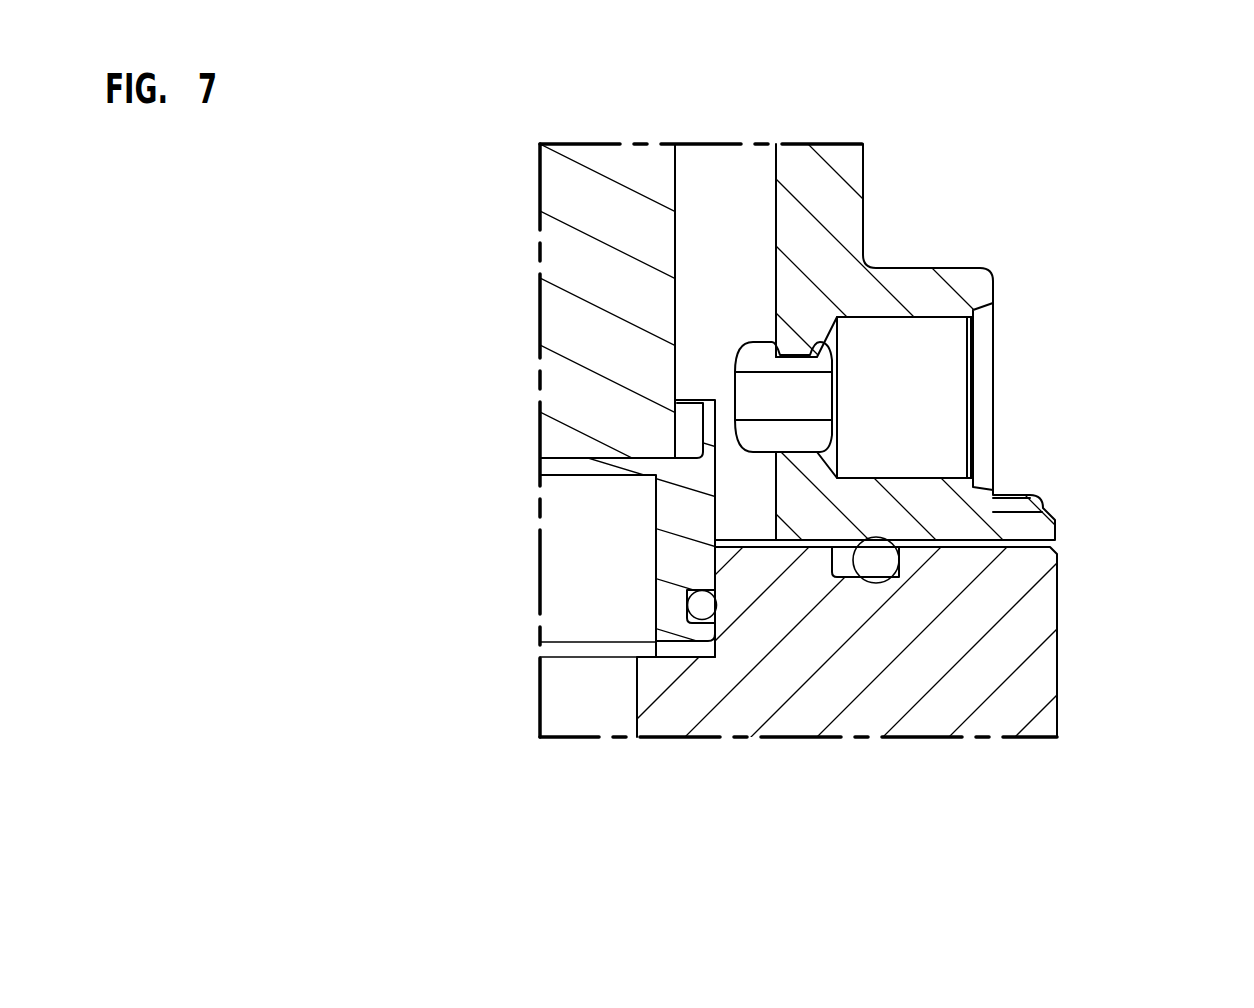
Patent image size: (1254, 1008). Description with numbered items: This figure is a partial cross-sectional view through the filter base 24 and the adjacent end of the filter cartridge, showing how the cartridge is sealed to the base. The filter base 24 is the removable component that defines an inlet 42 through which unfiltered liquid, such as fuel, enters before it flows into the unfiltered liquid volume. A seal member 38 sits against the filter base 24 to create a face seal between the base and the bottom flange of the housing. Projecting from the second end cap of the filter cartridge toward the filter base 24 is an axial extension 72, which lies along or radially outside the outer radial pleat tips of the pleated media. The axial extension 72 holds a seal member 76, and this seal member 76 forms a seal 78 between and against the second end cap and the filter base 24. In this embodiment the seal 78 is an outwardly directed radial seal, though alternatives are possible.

The filter base 24 is at (1013, 638).
The seal member 38 is at (882, 562).
The inlet 42 is at (993, 330).
The axial extension 72 is at (656, 512).
The seal member 76 is at (697, 603).
The seal 78 is at (717, 608).